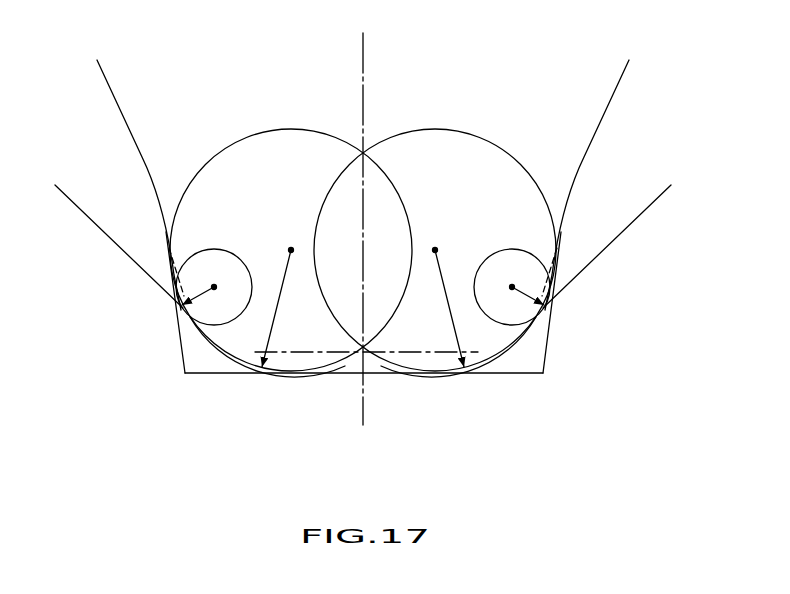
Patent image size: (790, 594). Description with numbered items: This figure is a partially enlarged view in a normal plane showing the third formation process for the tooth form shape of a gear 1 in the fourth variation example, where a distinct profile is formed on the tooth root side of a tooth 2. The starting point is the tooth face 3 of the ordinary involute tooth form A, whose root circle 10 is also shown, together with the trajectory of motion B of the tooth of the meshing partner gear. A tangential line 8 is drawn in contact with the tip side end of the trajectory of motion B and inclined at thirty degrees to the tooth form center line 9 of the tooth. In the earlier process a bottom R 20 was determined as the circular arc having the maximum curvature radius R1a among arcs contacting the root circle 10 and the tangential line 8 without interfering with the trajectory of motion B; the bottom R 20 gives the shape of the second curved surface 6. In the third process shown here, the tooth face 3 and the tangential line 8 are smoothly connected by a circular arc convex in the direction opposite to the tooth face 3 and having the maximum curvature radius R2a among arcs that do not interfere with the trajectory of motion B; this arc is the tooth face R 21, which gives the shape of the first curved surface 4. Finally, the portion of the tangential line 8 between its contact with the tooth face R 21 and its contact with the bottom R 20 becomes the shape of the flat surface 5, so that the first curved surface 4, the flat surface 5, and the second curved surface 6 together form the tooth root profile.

The gear 1 is at (655, 73).
The tooth 2 is at (103, 176).
The tooth face 3 is at (135, 131).
The first curved surface 4 is at (364, 300).
The flat surface 5 is at (180, 333).
The second curved surface 6 is at (356, 385).
The tangential line 8 is at (123, 254).
The center line 9 is at (363, 87).
The root circle 10 is at (376, 363).
The bottom R 20 is at (253, 363).
The tooth face R 21 is at (181, 306).
The involute tooth form A is at (182, 353).
The trajectory of motion B is at (333, 350).
The maximum curvature radius of bottom arc R1a is at (363, 250).
The maximum curvature radius of tooth face arc R2a is at (203, 280).